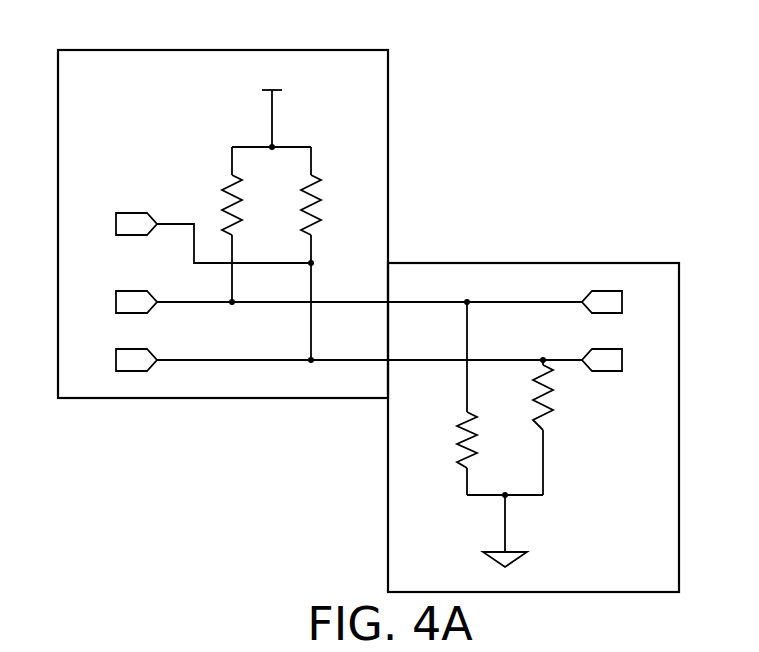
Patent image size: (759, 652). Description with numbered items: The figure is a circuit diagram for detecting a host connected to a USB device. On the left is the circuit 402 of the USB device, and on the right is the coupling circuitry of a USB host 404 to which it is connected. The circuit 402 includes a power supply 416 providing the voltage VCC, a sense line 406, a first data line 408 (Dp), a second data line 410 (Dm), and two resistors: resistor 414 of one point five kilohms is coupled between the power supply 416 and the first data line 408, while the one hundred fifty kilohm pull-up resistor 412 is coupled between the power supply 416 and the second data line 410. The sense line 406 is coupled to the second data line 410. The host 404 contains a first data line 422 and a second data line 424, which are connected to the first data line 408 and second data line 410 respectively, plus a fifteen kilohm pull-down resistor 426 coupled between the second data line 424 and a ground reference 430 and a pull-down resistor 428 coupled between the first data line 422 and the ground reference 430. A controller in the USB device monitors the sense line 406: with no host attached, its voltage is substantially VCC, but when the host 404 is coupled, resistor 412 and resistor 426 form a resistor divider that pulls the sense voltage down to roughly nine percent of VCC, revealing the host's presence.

The circuit 402 is at (390, 80).
The USB host 404 is at (682, 268).
The sense line 406 is at (153, 222).
The first data line 408 is at (153, 305).
The second data line 410 is at (153, 365).
The resistor 412 is at (318, 202).
The resistor 414 is at (240, 198).
The power supply 416 is at (300, 77).
The first data line 422 is at (633, 312).
The second data line 424 is at (622, 372).
The resistor 426 is at (550, 365).
The resistor 428 is at (473, 412).
The ground reference 430 is at (522, 547).